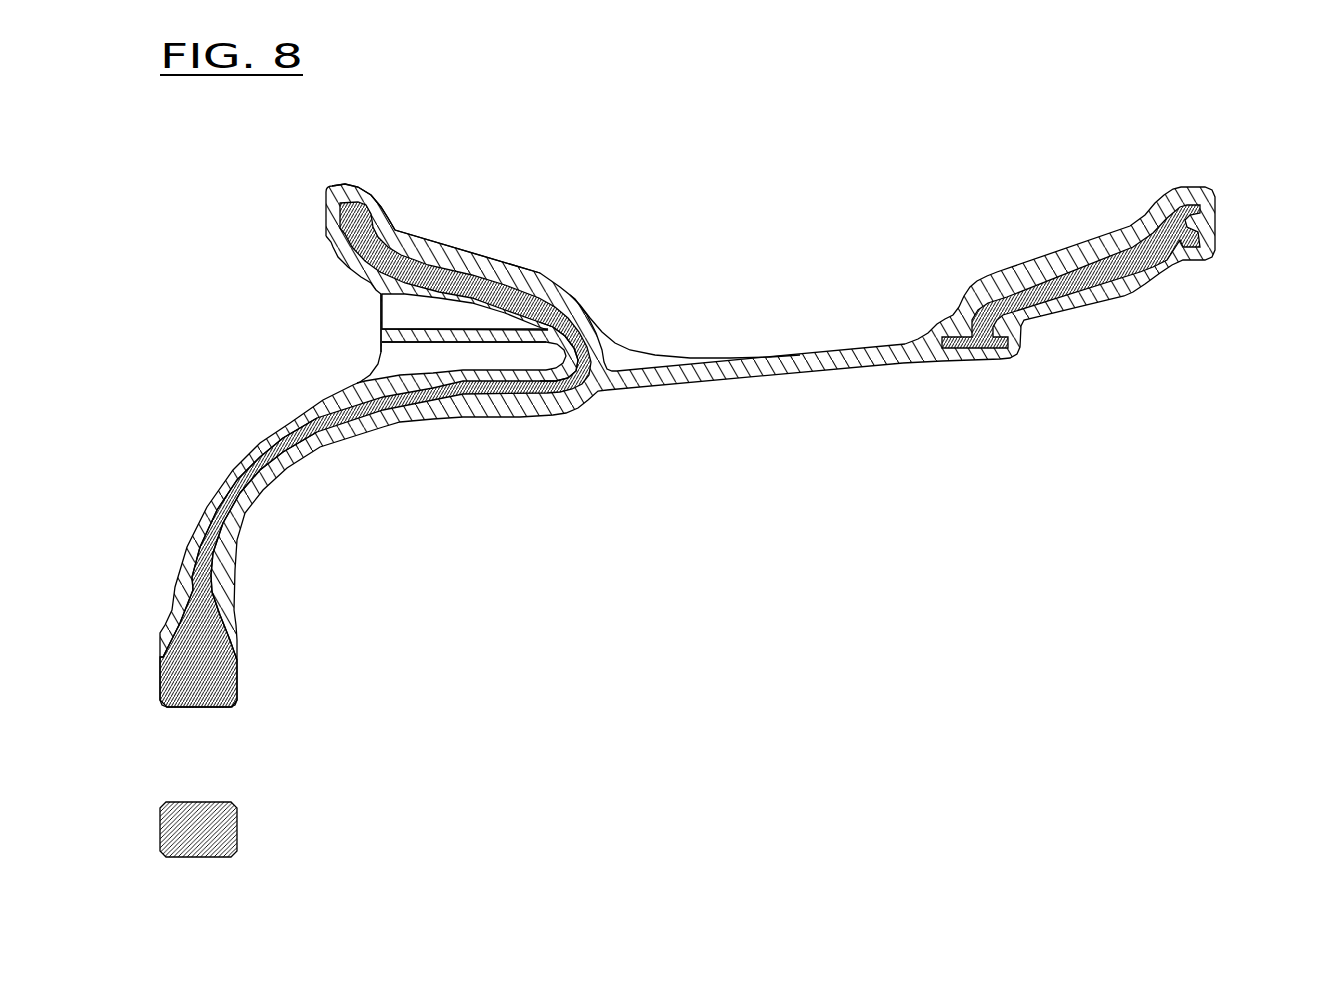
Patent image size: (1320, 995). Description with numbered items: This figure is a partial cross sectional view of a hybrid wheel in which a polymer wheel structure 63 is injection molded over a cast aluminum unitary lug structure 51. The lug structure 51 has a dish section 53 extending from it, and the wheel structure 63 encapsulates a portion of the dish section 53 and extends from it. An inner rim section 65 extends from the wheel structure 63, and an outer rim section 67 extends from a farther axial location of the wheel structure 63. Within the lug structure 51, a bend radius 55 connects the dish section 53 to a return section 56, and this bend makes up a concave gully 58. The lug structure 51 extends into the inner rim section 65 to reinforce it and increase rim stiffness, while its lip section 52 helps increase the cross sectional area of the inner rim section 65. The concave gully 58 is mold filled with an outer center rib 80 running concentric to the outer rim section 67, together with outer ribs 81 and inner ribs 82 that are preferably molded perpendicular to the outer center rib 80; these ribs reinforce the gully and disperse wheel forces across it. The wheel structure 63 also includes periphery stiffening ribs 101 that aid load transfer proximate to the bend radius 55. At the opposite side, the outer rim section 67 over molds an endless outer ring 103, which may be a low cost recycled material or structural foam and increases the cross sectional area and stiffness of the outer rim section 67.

The inner rim section 65 is at (317, 157).
The outer rim section 67 is at (1193, 156).
The wheel structure 63 is at (787, 363).
The return section 56 is at (503, 283).
The lip section 52 is at (393, 237).
The outer ribs 81 is at (410, 313).
The inner ribs 82 is at (415, 363).
The outer center rib 80 is at (513, 335).
The concave gully 58 is at (358, 325).
The dish section 53 is at (268, 462).
The bend radius 55 is at (579, 388).
The periphery stiffening ribs 101 is at (627, 355).
The unitary lug structure 51 is at (203, 662).
The outer ring 103 is at (1098, 282).